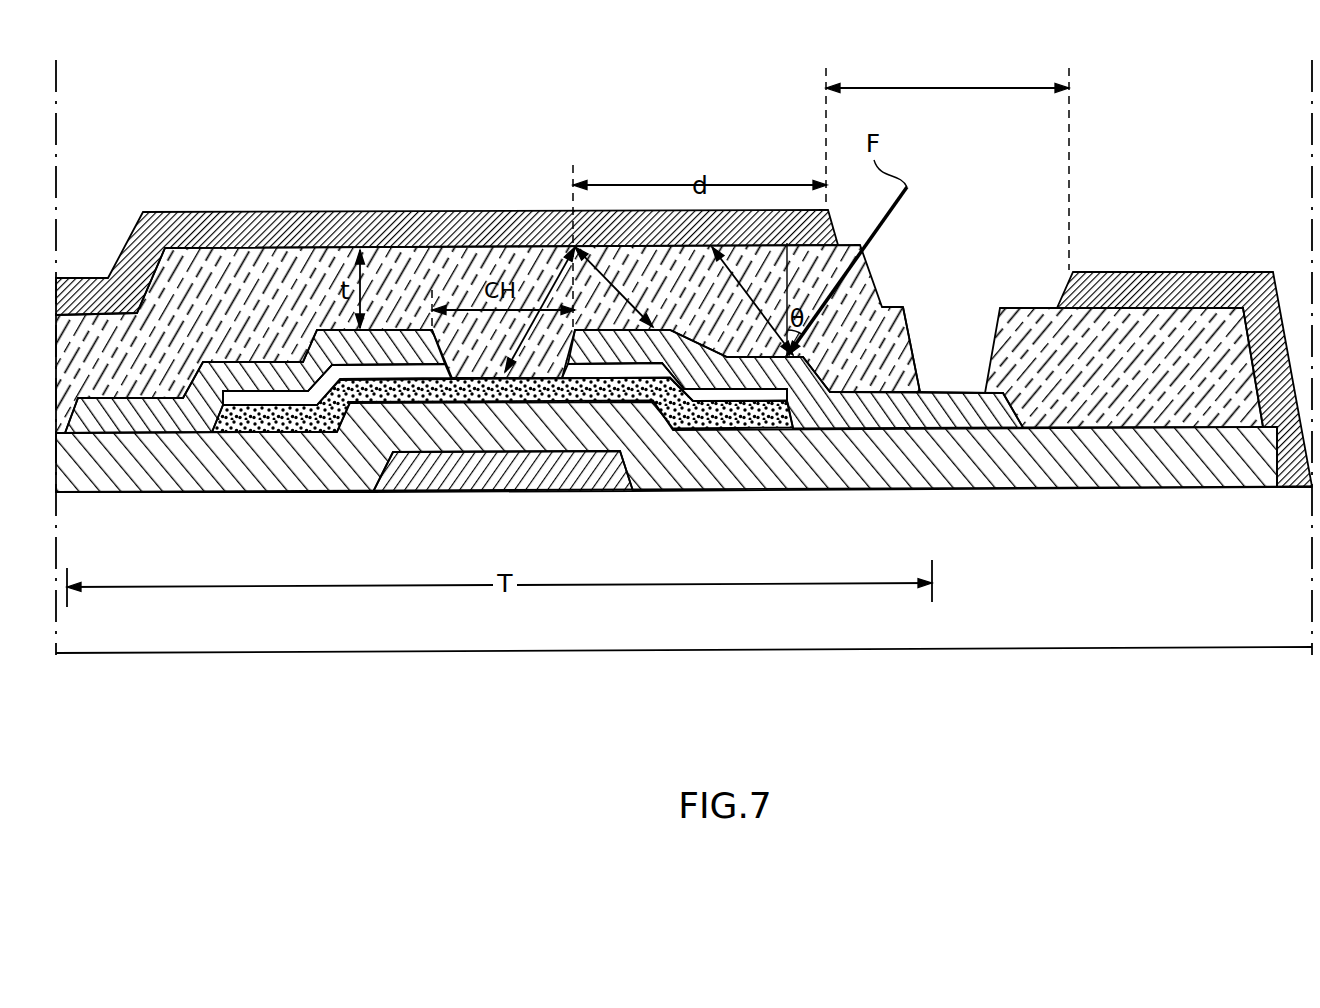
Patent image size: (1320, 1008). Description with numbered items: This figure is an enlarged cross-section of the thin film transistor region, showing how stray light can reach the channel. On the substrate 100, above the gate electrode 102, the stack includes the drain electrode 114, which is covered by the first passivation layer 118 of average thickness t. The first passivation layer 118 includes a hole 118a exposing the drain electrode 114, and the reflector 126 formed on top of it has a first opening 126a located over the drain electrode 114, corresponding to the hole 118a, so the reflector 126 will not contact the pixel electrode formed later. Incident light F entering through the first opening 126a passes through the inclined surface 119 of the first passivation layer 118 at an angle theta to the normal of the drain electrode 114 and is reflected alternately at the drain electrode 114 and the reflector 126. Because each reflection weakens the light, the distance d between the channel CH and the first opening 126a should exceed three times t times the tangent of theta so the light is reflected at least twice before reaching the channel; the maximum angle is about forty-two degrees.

The substrate 100 is at (703, 567).
The gate electrode 102 is at (542, 484).
The drain electrode 114 is at (860, 420).
The first passivation layer 118 is at (90, 335).
The hole 118a is at (960, 323).
The inclined surface 119 is at (917, 337).
The reflector 126 is at (265, 222).
The first opening 126a is at (947, 164).